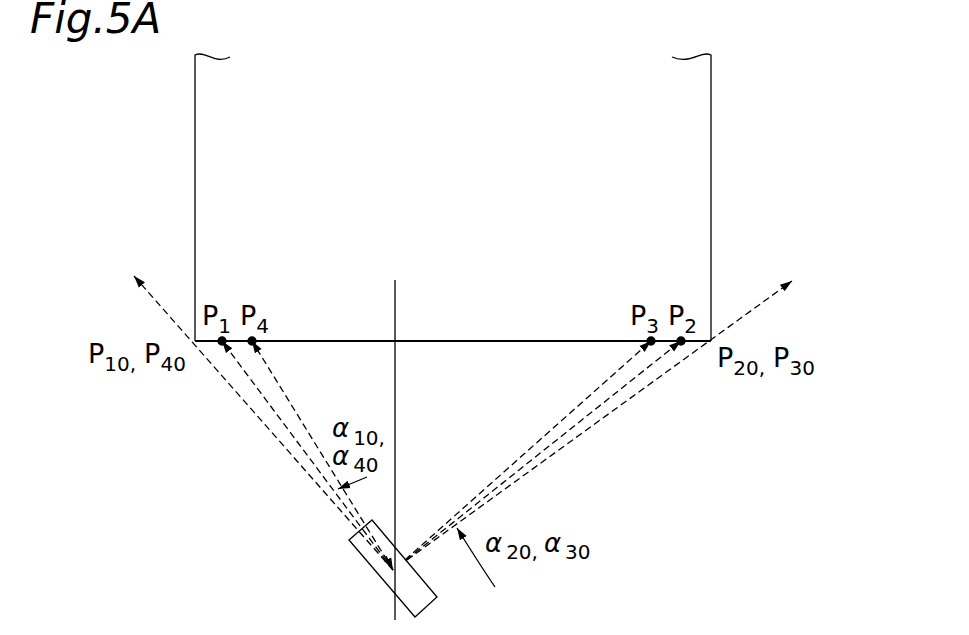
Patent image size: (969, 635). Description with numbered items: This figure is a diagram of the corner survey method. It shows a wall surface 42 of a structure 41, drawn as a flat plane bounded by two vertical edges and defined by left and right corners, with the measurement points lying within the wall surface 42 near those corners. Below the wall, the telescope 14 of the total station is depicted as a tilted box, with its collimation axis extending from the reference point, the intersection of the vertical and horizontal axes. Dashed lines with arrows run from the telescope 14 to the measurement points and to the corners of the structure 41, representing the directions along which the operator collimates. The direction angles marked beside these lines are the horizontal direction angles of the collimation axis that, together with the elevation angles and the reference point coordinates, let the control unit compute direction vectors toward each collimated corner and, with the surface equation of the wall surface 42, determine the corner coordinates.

The telescope 14 is at (370, 567).
The structure 41 is at (711, 209).
The wall surface 42 is at (453, 341).